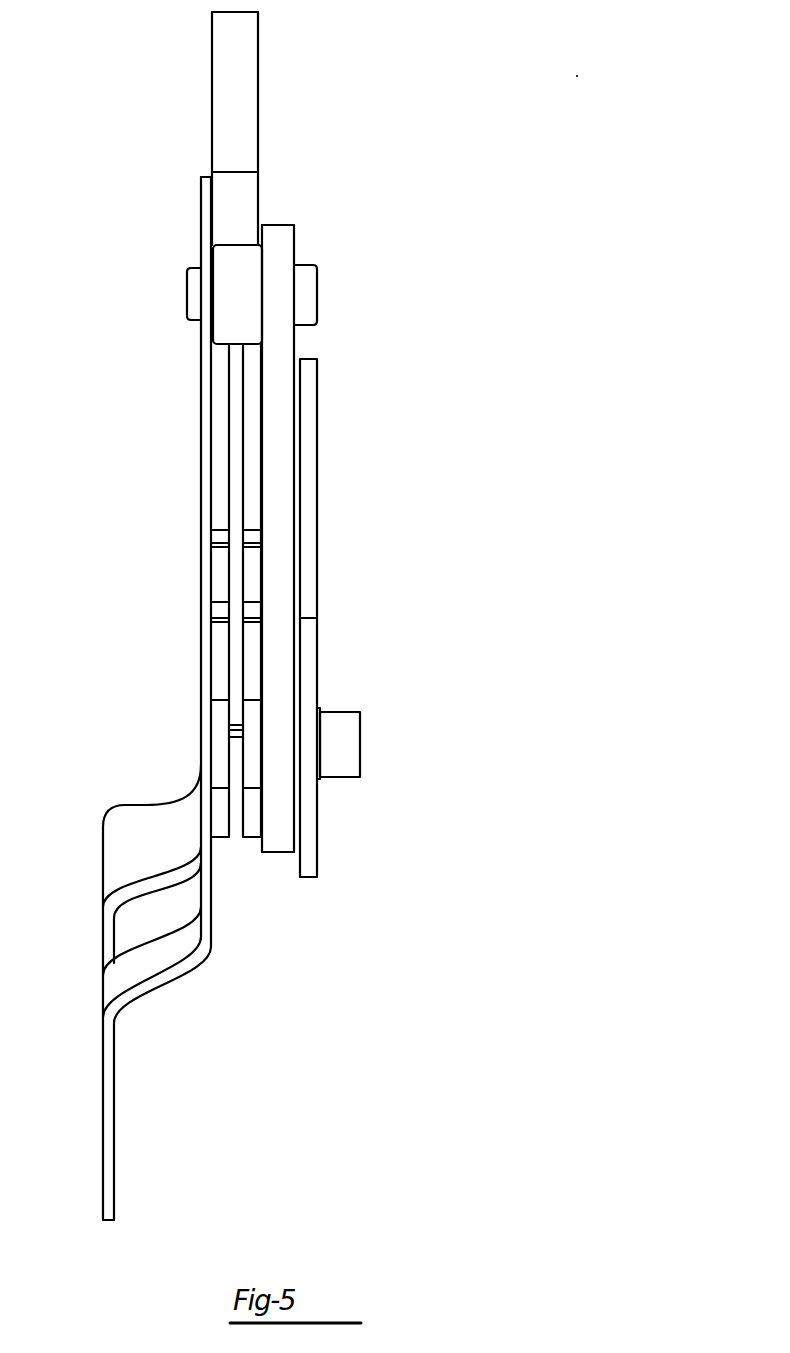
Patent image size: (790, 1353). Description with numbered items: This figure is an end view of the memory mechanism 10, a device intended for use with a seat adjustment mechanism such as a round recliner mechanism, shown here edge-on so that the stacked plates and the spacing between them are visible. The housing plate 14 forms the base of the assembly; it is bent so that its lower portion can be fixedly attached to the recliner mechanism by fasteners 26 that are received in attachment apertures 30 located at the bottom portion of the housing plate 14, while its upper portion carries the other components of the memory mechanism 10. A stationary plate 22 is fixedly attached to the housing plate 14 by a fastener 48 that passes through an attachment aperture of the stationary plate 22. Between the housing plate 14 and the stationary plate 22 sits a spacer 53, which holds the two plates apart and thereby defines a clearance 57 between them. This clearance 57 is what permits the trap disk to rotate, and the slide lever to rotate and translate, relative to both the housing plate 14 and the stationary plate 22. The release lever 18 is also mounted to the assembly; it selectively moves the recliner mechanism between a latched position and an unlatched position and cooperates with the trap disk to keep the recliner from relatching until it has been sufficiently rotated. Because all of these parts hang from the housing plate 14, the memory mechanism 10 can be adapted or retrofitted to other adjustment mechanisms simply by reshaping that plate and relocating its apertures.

The memory mechanism 10 is at (577, 76).
The housing plate 14 is at (102, 857).
The release lever 18 is at (320, 518).
The stationary plate 22 is at (259, 84).
The fasteners 26 is at (360, 745).
The attachment apertures 30 is at (155, 917).
The fastener 48 is at (318, 297).
The spacer 53 is at (227, 260).
The clearance 57 is at (262, 228).